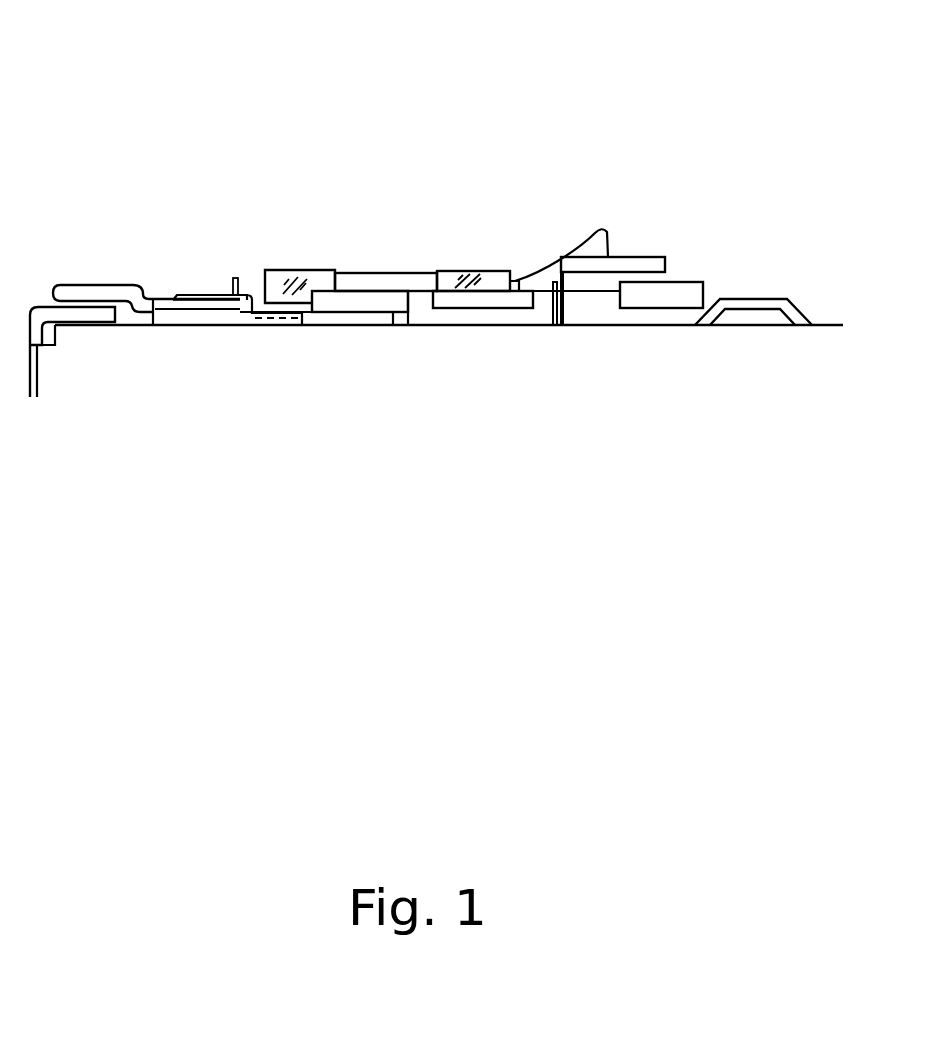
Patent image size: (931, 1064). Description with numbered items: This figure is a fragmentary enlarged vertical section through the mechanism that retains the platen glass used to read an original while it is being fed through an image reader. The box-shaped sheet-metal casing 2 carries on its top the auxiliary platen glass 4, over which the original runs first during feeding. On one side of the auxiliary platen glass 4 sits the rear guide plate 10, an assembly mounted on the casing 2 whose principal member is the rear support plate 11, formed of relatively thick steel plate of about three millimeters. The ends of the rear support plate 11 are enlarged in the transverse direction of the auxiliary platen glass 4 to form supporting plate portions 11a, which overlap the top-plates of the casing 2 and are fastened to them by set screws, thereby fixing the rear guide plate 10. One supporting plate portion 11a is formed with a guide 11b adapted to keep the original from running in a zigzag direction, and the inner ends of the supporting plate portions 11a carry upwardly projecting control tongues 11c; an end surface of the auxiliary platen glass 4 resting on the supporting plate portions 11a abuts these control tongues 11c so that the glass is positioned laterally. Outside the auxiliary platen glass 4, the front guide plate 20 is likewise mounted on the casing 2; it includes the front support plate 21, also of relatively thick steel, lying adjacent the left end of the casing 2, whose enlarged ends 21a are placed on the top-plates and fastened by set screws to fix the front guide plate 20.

The casing 2 is at (770, 347).
The auxiliary platen glass 4 is at (483, 278).
The rear guide plate 10 is at (665, 311).
The rear support plate 11 is at (590, 308).
The supporting plate portion 11a is at (513, 303).
The guide 11b is at (545, 277).
The control tongue 11c is at (383, 282).
The front guide plate 20 is at (142, 287).
The front support plate 21 is at (120, 287).
The supporting plate portion 21a is at (278, 320).